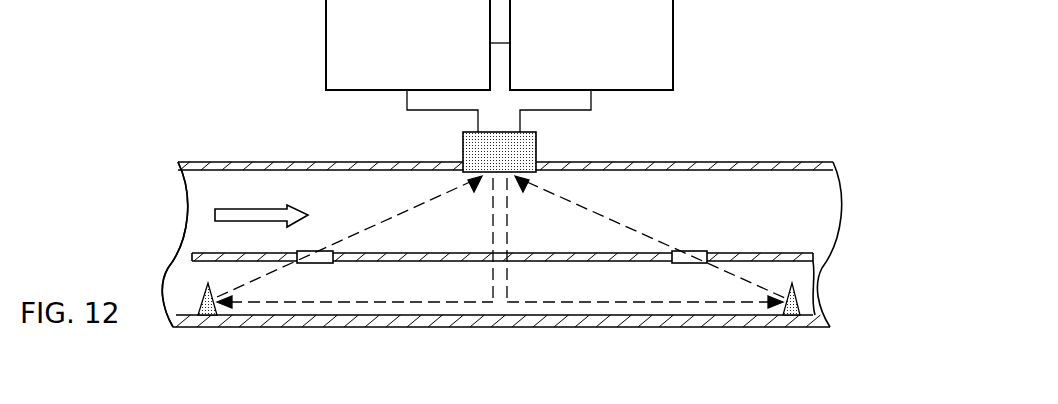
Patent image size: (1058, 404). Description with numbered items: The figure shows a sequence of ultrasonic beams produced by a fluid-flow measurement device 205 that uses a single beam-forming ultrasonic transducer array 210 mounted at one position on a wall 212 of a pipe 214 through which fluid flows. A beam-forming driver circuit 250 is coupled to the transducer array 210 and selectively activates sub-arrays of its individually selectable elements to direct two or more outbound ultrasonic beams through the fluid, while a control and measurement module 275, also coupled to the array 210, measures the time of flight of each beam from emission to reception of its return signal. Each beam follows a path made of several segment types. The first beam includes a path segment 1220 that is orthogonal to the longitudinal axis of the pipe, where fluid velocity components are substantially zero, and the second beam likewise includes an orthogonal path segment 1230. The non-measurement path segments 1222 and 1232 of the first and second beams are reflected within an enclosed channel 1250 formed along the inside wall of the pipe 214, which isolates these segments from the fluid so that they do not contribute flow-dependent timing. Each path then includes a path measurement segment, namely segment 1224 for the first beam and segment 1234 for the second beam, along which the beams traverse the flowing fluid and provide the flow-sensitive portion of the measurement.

The fluid-flow measurement device 205 is at (124, 163).
The beam-forming ultrasonic transducer array 210 is at (463, 152).
The wall 212 is at (670, 162).
The pipe 214 is at (181, 231).
The beam-forming driver circuit 250 is at (326, 35).
The control and measurement module 275 is at (673, 33).
The path segment 1220 is at (492, 228).
The path segment 1222 is at (337, 303).
The path measurement segment 1224 is at (385, 217).
The path segment 1230 is at (508, 228).
The path segment 1232 is at (640, 303).
The path measurement segment 1234 is at (633, 200).
The enclosed channel 1250 is at (192, 278).